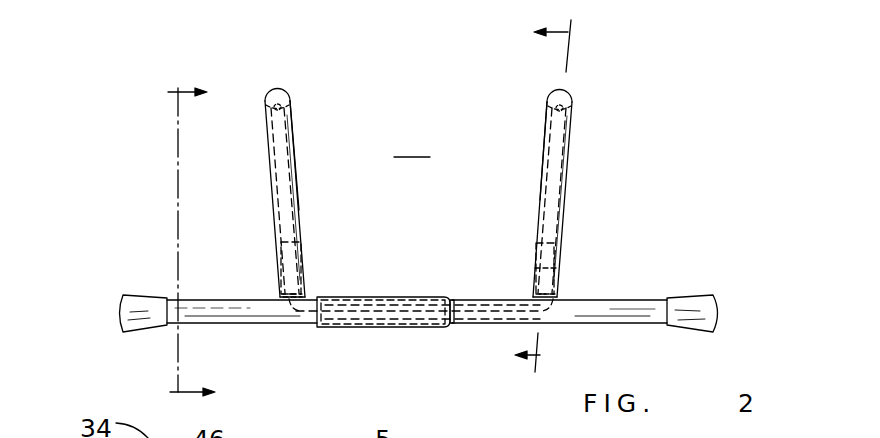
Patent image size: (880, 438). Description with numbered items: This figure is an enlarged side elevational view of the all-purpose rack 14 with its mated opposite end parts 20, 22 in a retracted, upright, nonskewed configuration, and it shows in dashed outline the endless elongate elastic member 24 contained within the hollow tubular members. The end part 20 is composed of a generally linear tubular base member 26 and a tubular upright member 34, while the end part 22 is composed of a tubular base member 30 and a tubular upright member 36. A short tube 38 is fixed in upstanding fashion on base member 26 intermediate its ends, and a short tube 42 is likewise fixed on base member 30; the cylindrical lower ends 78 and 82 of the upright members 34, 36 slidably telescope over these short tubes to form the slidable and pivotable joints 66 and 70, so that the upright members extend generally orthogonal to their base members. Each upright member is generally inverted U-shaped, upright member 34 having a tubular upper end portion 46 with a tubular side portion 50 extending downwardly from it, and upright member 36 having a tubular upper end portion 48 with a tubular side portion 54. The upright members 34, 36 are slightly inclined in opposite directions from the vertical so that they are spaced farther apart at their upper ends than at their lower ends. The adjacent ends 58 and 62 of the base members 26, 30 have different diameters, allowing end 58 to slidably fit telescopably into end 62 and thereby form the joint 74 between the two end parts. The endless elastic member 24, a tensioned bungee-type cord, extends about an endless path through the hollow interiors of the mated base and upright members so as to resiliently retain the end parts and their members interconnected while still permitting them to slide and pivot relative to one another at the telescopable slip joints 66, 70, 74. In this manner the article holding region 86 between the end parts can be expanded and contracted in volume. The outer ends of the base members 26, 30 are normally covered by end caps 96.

The all-purpose rack 14 is at (672, 132).
The end part 20 is at (272, 218).
The end part 22 is at (569, 218).
The endless elongate elastic member 24 is at (272, 155).
The tubular base member 26 is at (214, 322).
The tubular base member 30 is at (604, 322).
The tubular upright member 34 is at (306, 188).
The tubular upright member 36 is at (532, 201).
The short tube 38 is at (290, 262).
The short tube 42 is at (554, 262).
The tubular upper end portion 46 is at (277, 84).
The tubular upper end portion 48 is at (566, 89).
The tubular side portion 50 is at (292, 130).
The tubular side portion 54 is at (564, 155).
The adjacent end of base member 58 is at (372, 328).
The adjacent end of base member 62 is at (370, 329).
The slidable and pivotable joint 66 is at (308, 245).
The slidable and pivotable joint 70 is at (530, 268).
The slidable and pivotable joint 74 is at (398, 290).
The cylindrical lower end 78 is at (308, 263).
The cylindrical lower end 82 is at (556, 283).
The article holding region 86 is at (412, 143).
The end cap 96 is at (118, 320).